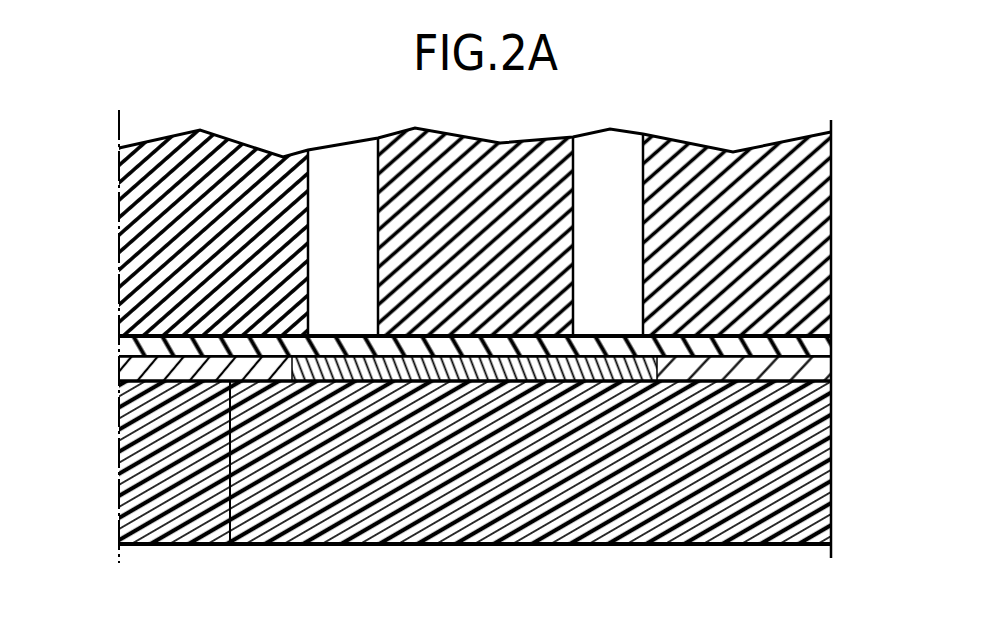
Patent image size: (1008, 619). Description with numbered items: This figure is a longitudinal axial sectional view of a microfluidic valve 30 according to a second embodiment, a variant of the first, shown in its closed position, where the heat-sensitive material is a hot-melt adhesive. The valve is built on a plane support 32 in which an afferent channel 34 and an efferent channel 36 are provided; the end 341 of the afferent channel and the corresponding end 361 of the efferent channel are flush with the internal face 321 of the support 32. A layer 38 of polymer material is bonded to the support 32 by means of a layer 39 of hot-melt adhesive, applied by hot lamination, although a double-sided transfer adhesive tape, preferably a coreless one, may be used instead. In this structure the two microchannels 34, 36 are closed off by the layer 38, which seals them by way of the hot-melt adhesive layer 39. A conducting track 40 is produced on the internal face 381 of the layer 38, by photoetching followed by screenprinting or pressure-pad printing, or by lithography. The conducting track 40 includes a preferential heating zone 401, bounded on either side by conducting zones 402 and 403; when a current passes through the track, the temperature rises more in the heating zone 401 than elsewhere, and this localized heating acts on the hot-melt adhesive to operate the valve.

The microfluidic valve 30 is at (110, 234).
The plane support 32 is at (790, 228).
The internal face 321 is at (158, 334).
The afferent channel 34 is at (338, 155).
The end of the afferent channel 341 is at (342, 337).
The efferent channel 36 is at (613, 160).
The bottom of second opening 361 is at (608, 337).
The layer of polymer material 38 is at (427, 480).
The internal face 381 is at (230, 544).
The layer of hot-melt adhesive 39 is at (793, 352).
The conducting track 40 is at (113, 356).
The preferential heating zone 401 is at (520, 381).
The conducting zone 402 is at (183, 367).
The conducting zone 403 is at (792, 370).